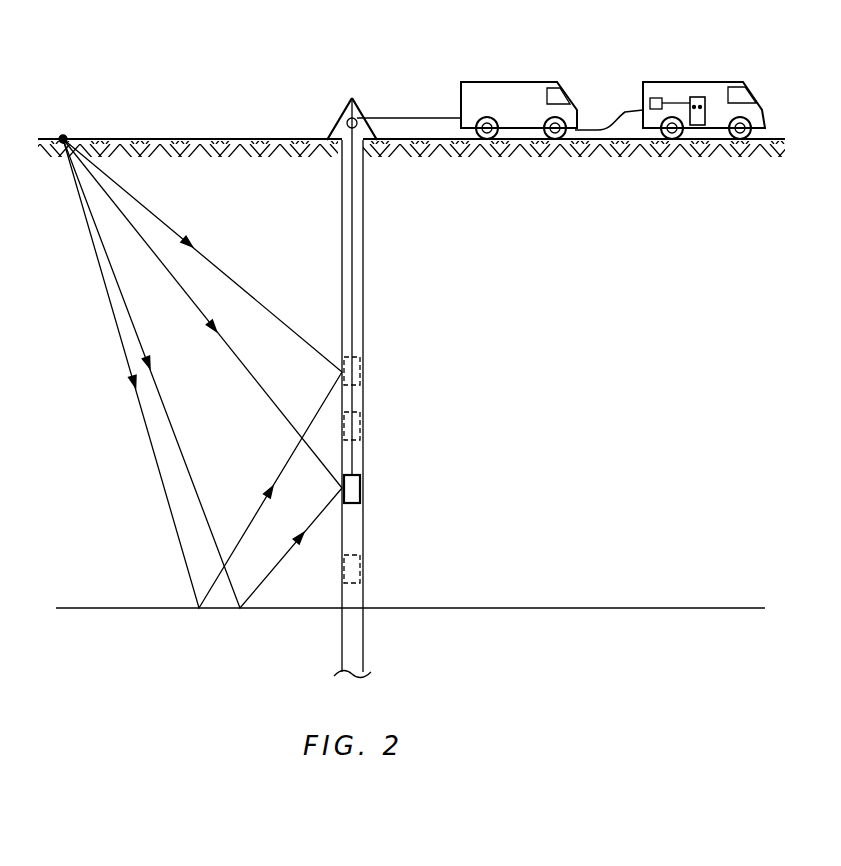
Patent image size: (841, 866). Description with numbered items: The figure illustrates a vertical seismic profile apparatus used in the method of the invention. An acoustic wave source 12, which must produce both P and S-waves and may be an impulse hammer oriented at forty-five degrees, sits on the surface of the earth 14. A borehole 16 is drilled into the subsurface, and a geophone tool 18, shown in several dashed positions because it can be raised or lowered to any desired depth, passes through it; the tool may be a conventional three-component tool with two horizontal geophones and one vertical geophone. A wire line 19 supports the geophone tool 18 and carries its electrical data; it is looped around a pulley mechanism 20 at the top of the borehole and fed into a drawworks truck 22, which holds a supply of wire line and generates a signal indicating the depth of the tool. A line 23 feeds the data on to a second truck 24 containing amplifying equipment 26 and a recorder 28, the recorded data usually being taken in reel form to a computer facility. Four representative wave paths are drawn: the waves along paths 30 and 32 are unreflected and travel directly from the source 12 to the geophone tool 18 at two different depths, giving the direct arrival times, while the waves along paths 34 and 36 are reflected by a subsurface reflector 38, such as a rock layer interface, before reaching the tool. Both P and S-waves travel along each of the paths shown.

The acoustic wave source 12 is at (63, 137).
The surface of the earth 14 is at (170, 139).
The borehole 16 is at (360, 310).
The geophone tool 18 is at (360, 490).
The wire line 19 is at (352, 265).
The pulley mechanism 20 is at (334, 124).
The drawworks truck 22 is at (505, 82).
The line 23 is at (621, 124).
The truck 24 is at (683, 82).
The amplifying equipment 26 is at (652, 98).
The recorder 28 is at (705, 100).
The direct wave path 30 is at (228, 345).
The direct wave path 32 is at (222, 268).
The reflected wave path 34 is at (161, 398).
The reflected wave path 36 is at (142, 413).
The subsurface reflector 38 is at (90, 608).